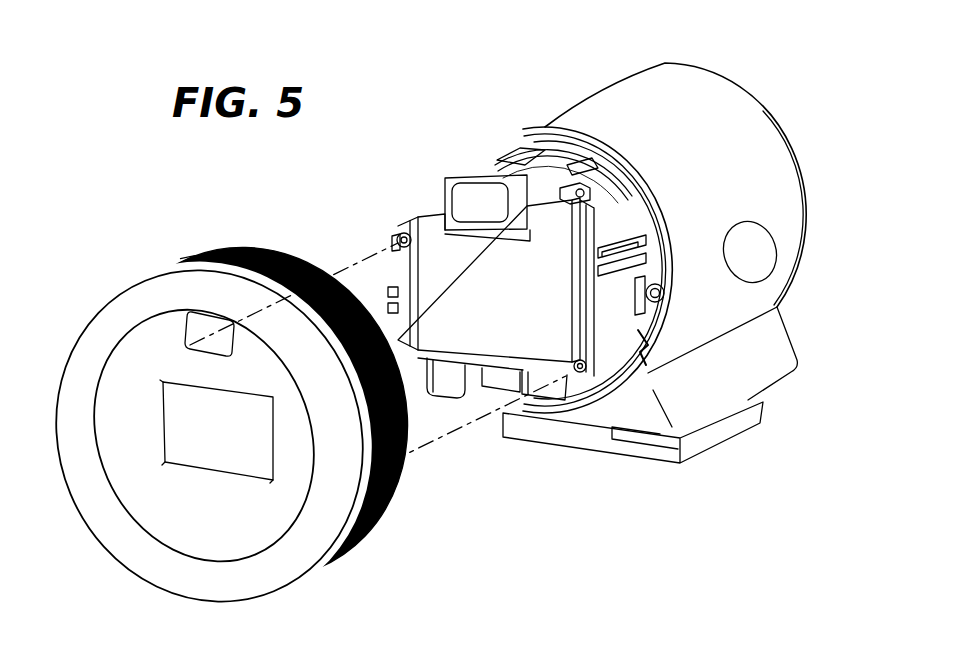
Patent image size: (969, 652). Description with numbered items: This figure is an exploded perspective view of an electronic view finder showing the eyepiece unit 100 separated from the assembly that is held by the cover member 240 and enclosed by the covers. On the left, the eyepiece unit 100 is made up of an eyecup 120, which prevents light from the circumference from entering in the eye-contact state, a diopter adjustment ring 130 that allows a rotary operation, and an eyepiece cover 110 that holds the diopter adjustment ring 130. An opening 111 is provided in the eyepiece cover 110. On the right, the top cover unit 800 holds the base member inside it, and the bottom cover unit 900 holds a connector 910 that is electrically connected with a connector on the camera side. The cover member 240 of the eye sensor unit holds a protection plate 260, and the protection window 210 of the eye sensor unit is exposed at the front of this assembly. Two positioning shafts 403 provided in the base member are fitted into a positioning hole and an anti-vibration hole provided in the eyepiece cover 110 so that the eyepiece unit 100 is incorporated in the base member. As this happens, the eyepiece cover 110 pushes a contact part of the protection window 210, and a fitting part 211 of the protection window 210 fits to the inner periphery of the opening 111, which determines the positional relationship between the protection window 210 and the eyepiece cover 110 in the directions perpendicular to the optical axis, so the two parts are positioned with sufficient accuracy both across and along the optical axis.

The eyepiece unit 100 is at (229, 426).
The eyepiece cover 110 is at (168, 523).
The opening 111 is at (197, 323).
The eyecup 120 is at (98, 320).
The diopter adjustment ring 130 is at (260, 250).
The protection window 210 is at (495, 167).
The fitting part 211 is at (468, 198).
The cover member 240 is at (417, 206).
The protection plate 260 is at (548, 278).
The positioning shafts 403 is at (398, 236).
The top cover unit 800 is at (600, 90).
The bottom cover unit 900 is at (767, 382).
The connector 910 is at (722, 435).